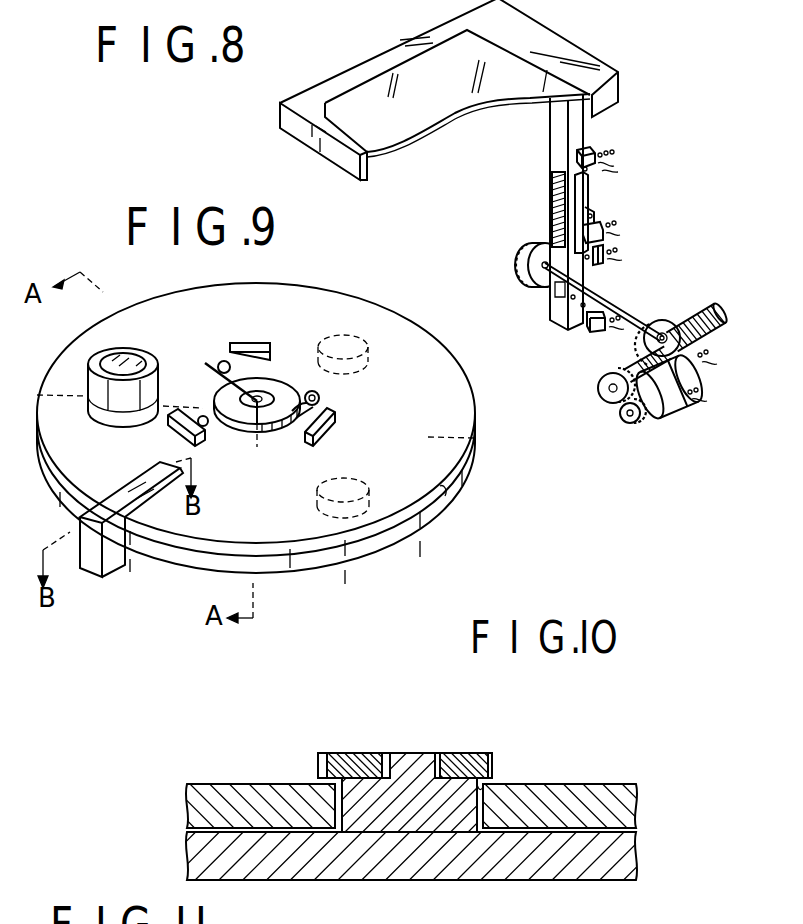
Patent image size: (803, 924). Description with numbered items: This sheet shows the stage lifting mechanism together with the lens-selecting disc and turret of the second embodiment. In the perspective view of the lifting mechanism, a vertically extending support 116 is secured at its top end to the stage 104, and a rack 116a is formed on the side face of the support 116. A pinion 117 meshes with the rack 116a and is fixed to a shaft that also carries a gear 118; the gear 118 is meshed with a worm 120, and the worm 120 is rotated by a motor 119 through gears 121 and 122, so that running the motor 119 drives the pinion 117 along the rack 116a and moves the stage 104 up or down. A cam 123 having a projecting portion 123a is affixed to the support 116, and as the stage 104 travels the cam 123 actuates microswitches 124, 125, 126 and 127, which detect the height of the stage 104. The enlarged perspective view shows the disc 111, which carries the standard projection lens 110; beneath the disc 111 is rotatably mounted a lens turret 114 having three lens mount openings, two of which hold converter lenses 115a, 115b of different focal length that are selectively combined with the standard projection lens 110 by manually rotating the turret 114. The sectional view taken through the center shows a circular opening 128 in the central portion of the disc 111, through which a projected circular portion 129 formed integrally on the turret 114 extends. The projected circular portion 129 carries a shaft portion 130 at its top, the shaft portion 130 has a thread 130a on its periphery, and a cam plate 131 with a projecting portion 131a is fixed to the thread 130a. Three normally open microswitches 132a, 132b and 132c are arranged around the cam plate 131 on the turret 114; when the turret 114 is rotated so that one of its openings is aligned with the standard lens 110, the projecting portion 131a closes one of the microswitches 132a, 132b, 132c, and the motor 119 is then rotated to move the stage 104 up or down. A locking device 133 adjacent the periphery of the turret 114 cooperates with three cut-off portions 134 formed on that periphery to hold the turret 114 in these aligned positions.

In FIG. 8, the stage 104 is at (376, 62).
In FIG. 8, the support 116 is at (550, 112).
In FIG. 8, the rack 116a is at (552, 205).
In FIG. 8, the pinion 117 is at (525, 258).
In FIG. 8, the gear 118 is at (670, 318).
In FIG. 8, the motor 119 is at (672, 414).
In FIG. 8, the worm 120 is at (726, 320).
In FIG. 8, the gear 121 is at (603, 384).
In FIG. 8, the gear 122 is at (636, 426).
In FIG. 8, the cam 123 is at (575, 182).
In FIG. 8, the projecting portion 123a is at (607, 200).
In FIG. 8, the microswitch 124 is at (594, 150).
In FIG. 8, the microswitch 125 is at (587, 214).
In FIG. 8, the microswitch 126 is at (598, 265).
In FIG. 8, the microswitch 127 is at (593, 332).
In FIG. 9, the standard projection lens 110 is at (162, 377).
In FIG. 9, the disc 111 is at (458, 407).
In FIG. 10, the disc 111 is at (610, 790).
In FIG. 9, the lens turret 114 is at (397, 537).
In FIG. 10, the lens turret 114 is at (585, 870).
In FIG. 9, the converter lens 115a is at (348, 490).
In FIG. 9, the converter lens 115b is at (368, 360).
In FIG. 9, the shaft portion 130 is at (265, 390).
In FIG. 10, the shaft portion 130 is at (403, 757).
In FIG. 10, the thread 130a is at (438, 757).
In FIG. 9, the cam plate 131 is at (262, 430).
In FIG. 10, the cam plate 131 is at (468, 755).
In FIG. 9, the projecting portion 131a is at (319, 398).
In FIG. 10, the projecting portion 131a is at (318, 758).
In FIG. 9, the microswitch 132a is at (330, 435).
In FIG. 9, the microswitch 132b is at (250, 343).
In FIG. 9, the microswitch 132c is at (171, 432).
In FIG. 9, the locking device 133 is at (148, 483).
In FIG. 9, the cut-off portion 134 is at (445, 494).
In FIG. 10, the circular opening 128 is at (482, 790).
In FIG. 10, the projected circular portion 129 is at (478, 807).